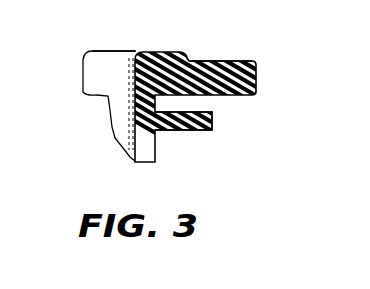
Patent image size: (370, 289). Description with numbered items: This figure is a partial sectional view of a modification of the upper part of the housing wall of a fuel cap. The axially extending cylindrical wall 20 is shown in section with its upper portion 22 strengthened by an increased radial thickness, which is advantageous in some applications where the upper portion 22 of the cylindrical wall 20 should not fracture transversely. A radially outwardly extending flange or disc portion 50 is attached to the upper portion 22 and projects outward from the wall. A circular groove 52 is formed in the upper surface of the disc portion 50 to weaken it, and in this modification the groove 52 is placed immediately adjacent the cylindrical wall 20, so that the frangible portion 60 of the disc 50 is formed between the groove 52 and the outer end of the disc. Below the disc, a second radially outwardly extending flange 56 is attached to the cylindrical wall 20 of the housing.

The cylindrical wall 20 is at (88, 98).
The upper portion 22 is at (152, 50).
The disc portion 50 is at (250, 96).
The circular groove 52 is at (183, 72).
The flange 56 is at (212, 120).
The frangible portion 60 is at (242, 62).